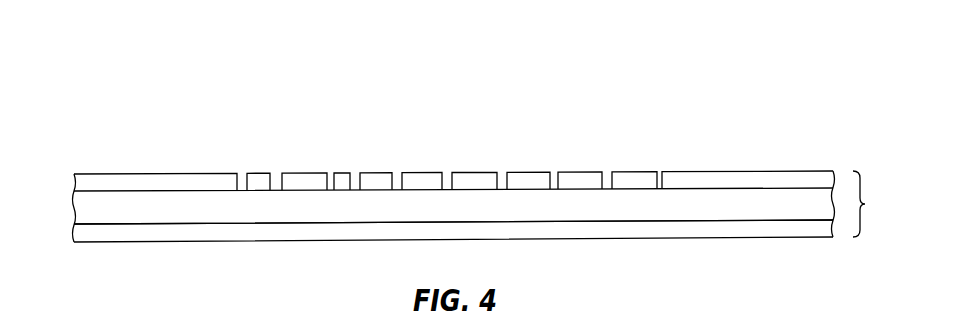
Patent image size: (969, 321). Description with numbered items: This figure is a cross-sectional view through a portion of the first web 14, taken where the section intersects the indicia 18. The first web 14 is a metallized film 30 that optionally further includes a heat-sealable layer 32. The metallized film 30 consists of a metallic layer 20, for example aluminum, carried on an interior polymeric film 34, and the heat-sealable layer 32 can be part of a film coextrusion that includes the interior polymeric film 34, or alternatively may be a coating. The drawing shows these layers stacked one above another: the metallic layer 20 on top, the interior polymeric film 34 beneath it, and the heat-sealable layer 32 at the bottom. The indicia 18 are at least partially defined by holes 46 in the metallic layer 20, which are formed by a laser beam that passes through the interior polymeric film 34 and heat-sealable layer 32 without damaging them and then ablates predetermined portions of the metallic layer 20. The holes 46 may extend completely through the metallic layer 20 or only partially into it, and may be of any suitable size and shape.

The first web 14 is at (782, 51).
The indicia 18 is at (672, 151).
The metallic layer 20 is at (163, 183).
The metallized film 30 is at (872, 204).
The heat-sealable layer 32 is at (181, 230).
The interior polymeric film 34 is at (90, 208).
The holes 46 is at (329, 168).